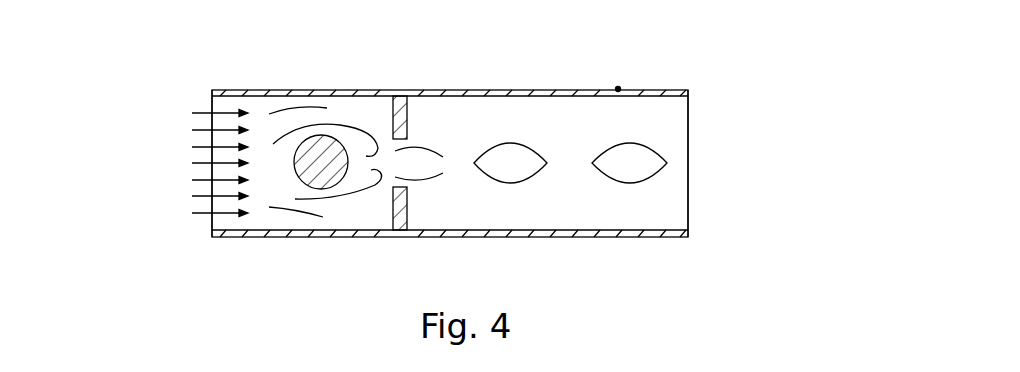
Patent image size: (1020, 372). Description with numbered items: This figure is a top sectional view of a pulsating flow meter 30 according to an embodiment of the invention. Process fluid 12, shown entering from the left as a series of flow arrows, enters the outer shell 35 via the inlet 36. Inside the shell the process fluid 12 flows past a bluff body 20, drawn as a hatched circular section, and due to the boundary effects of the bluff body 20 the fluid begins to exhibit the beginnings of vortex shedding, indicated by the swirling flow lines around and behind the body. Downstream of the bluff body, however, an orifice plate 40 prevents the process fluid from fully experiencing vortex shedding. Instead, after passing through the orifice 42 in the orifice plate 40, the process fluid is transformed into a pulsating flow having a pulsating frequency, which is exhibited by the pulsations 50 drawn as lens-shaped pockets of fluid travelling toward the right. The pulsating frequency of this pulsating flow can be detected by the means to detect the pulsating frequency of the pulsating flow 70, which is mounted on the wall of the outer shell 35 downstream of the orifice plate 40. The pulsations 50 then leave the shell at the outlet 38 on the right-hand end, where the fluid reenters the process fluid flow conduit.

The pulsating flow meter 30 is at (200, 60).
The outer shell 35 is at (518, 90).
The inlet 36 is at (208, 100).
The outlet 38 is at (688, 193).
The process fluid 12 is at (200, 178).
The bluff body 20 is at (336, 135).
The orifice plate 40 is at (408, 113).
The orifice 42 is at (408, 188).
The pulsations 50 is at (533, 143).
The means to detect the pulsating frequency of the pulsating flow 70 is at (618, 87).